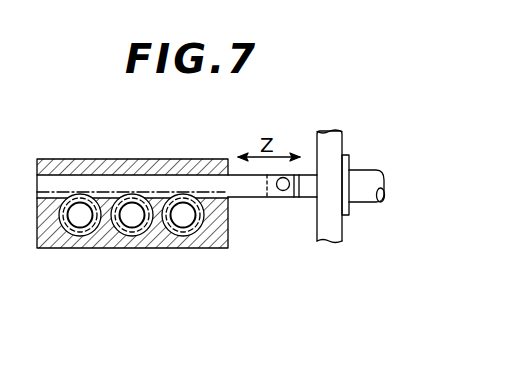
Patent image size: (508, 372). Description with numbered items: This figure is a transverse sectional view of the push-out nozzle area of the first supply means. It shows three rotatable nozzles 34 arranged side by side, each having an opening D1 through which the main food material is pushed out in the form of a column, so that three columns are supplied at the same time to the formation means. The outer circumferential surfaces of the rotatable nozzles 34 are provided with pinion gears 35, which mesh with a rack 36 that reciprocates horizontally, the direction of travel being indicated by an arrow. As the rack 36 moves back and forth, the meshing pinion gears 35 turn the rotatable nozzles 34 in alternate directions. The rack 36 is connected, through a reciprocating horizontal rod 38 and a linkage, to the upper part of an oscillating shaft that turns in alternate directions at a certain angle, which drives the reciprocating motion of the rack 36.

The rotatable nozzle 34 is at (45, 248).
The pinion gear 35 is at (80, 213).
The rack 36 is at (253, 185).
The reciprocating horizontal rod 38 is at (367, 190).
The opening D1 is at (75, 248).